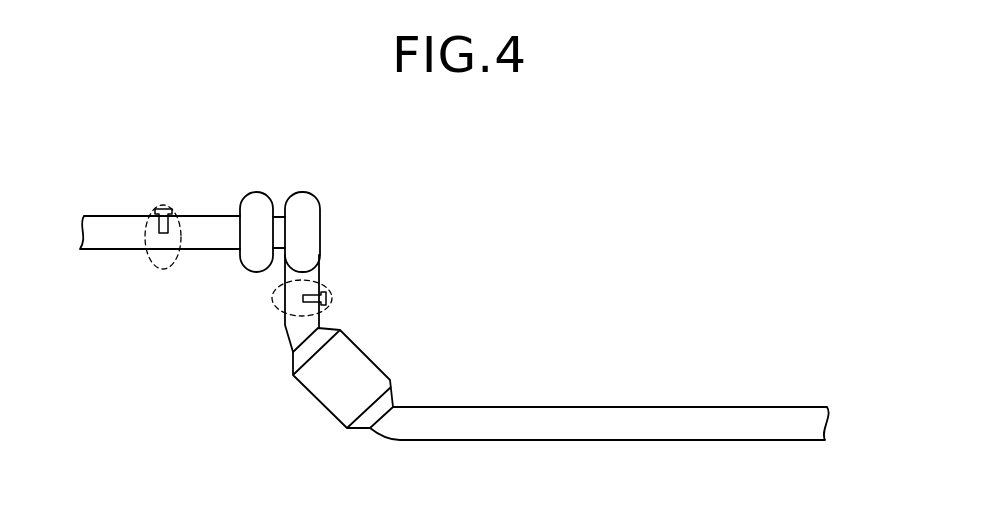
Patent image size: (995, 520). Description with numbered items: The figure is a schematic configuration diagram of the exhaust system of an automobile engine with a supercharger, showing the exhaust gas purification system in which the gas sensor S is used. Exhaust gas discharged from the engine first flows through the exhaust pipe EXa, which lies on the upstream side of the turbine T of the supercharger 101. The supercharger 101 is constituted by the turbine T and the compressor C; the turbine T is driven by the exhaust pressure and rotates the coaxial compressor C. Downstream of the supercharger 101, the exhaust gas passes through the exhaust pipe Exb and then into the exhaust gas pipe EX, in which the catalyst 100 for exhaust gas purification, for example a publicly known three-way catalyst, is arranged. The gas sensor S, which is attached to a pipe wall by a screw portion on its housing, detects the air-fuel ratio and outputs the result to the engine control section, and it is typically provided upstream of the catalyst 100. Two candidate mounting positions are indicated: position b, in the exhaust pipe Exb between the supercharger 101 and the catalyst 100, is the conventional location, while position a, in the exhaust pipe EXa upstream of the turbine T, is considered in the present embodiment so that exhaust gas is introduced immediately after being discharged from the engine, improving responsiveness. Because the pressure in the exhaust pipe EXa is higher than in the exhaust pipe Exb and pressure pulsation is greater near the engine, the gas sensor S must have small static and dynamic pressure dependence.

The supercharger 101 is at (290, 177).
The turbine T is at (257, 200).
The compressor C is at (300, 200).
The gas sensor S is at (173, 212).
The sensor mounting region on upstream exhaust pipe a is at (168, 269).
The sensor mounting region on downstream pipe b is at (323, 283).
The catalyst 100 is at (363, 375).
The exhaust gas pipe EX is at (617, 423).
The exhaust pipe EXa is at (103, 216).
The exhaust pipe Exb is at (282, 333).